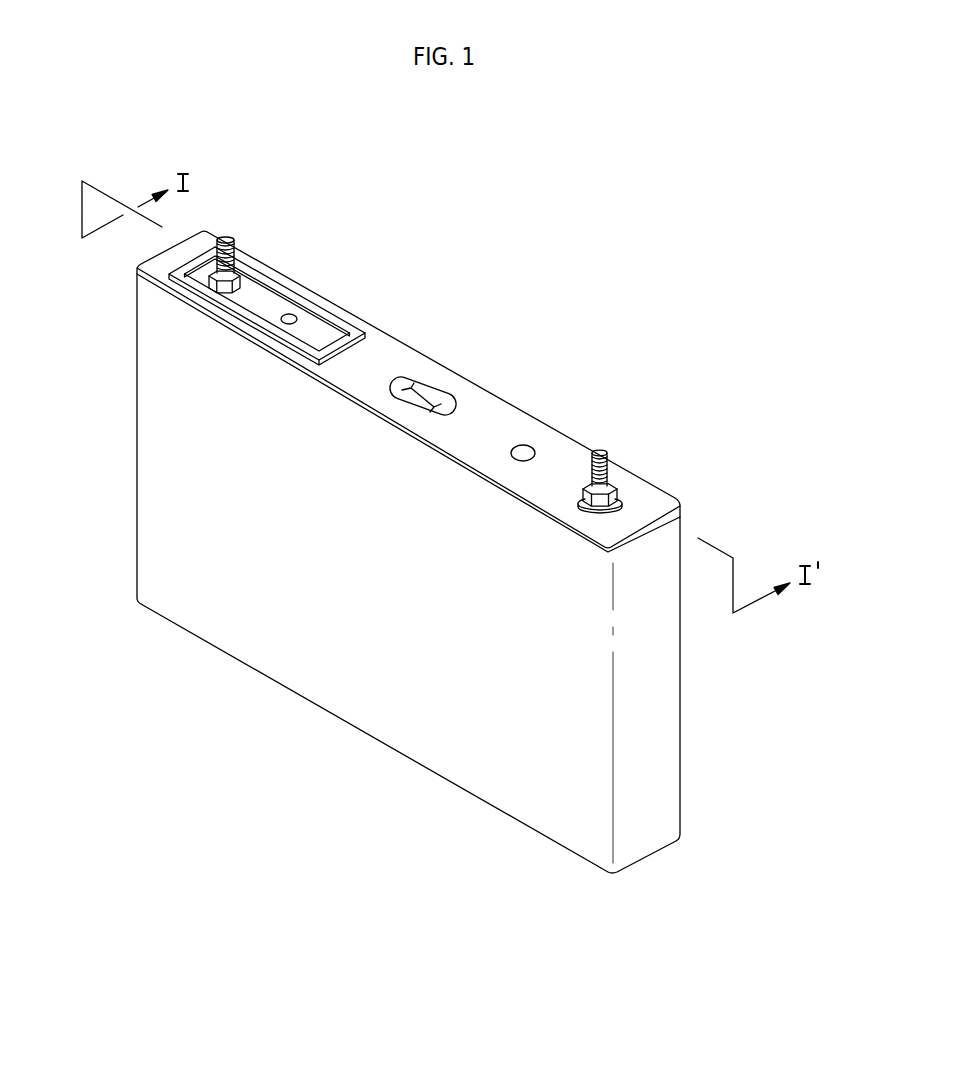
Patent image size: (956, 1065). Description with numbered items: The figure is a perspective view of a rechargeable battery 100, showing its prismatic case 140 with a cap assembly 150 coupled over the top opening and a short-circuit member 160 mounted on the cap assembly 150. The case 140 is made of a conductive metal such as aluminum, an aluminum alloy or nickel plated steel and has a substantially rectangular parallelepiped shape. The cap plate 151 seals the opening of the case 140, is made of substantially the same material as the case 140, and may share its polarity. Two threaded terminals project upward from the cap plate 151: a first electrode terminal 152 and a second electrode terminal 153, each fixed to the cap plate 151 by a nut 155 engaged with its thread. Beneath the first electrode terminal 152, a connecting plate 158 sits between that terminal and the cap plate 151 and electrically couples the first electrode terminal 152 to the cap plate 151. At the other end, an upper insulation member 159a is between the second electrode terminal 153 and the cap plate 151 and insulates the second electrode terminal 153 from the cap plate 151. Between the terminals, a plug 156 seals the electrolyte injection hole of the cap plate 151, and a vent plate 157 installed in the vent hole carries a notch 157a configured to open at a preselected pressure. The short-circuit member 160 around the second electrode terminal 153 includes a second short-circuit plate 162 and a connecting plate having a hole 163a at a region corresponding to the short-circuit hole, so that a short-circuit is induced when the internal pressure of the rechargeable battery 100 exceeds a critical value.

The rechargeable battery 100 is at (461, 211).
The case 140 is at (353, 710).
The cap assembly 150 is at (513, 394).
The cap plate 151 is at (393, 360).
The first electrode terminal 152 is at (600, 453).
The second electrode terminal 153 is at (224, 240).
The nut 155 is at (207, 285).
The plug 156 is at (527, 447).
The vent plate 157 is at (425, 381).
The notch 157a is at (438, 388).
The connecting plate 158 is at (622, 493).
The upper insulation member 159a is at (338, 307).
The short-circuit member 160 is at (288, 282).
The second short-circuit plate 162 is at (259, 293).
The hole 163a is at (294, 314).